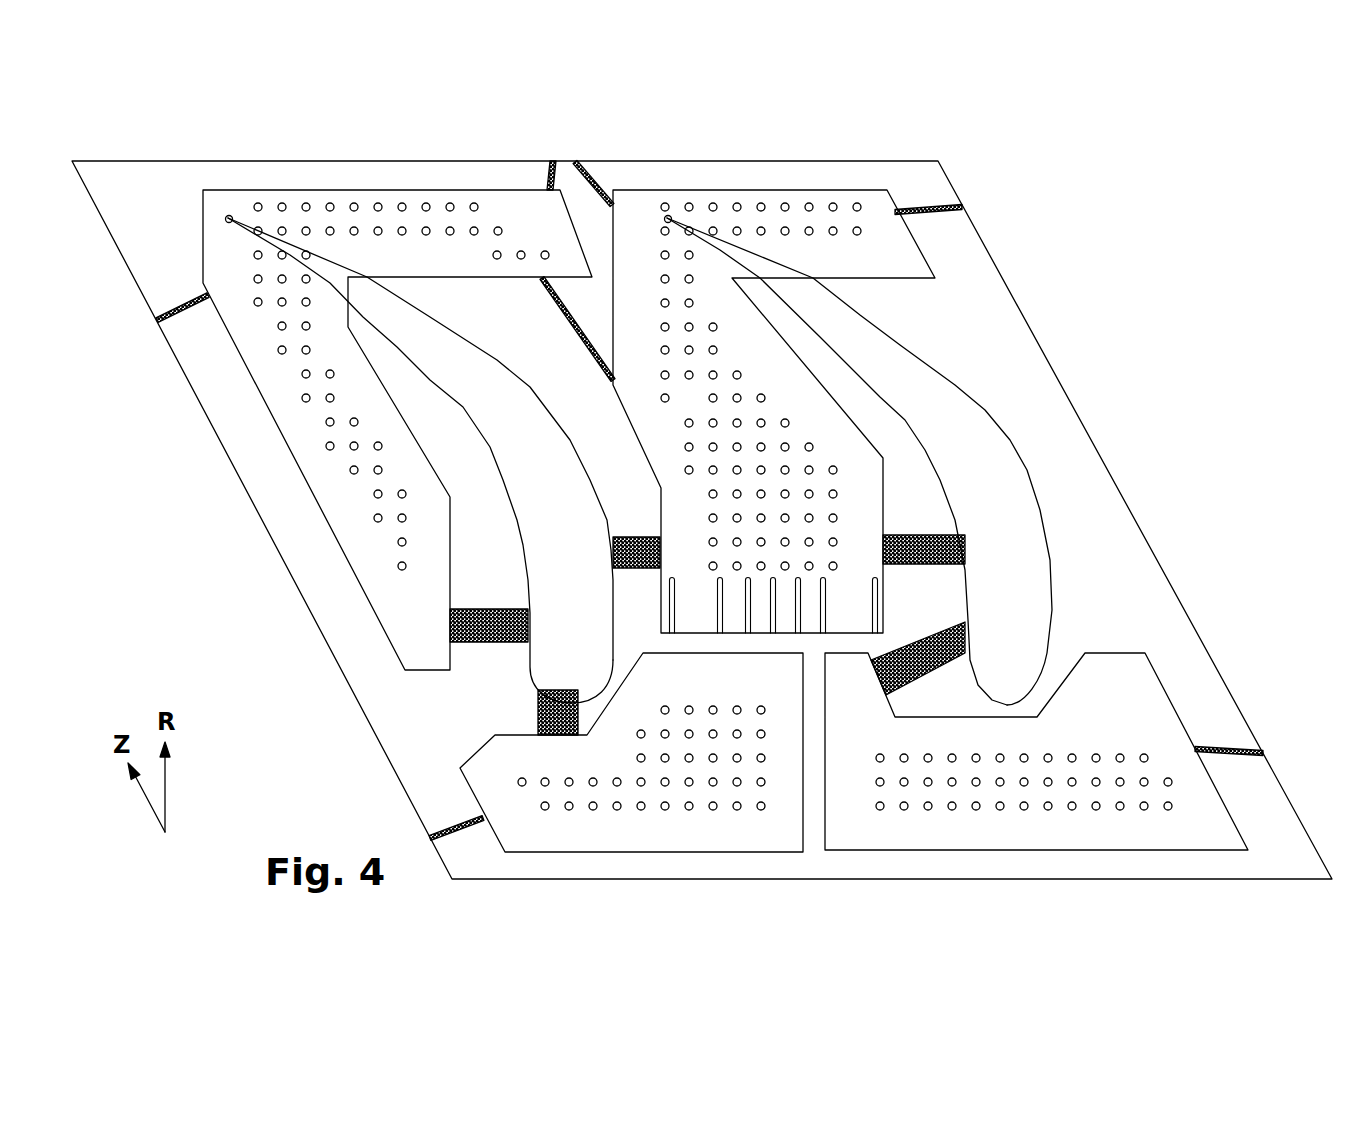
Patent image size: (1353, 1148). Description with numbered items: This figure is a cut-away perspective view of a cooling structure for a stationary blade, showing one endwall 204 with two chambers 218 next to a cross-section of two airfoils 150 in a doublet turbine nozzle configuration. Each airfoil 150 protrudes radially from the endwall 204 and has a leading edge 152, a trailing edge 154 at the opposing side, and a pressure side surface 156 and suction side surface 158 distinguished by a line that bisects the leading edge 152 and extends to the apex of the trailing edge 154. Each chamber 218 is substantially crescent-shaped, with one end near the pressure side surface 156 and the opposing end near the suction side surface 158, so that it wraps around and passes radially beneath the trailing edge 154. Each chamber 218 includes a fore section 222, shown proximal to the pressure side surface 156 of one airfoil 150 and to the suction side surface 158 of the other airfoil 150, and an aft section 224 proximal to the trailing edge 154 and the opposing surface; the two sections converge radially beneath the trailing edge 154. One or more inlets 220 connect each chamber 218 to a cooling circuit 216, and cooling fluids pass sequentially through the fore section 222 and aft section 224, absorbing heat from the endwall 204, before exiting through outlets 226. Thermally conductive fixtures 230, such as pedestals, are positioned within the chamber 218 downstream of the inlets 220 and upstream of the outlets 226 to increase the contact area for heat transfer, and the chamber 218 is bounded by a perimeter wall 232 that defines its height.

The airfoil 150 is at (468, 677).
The leading edge 152 is at (537, 678).
The trailing edge 154 is at (228, 216).
The pressure side surface 156 is at (527, 653).
The suction side surface 158 is at (607, 497).
The endwall 204 is at (906, 160).
The cooling circuit 216 is at (548, 517).
The chamber 218 is at (206, 198).
The inlet 220 is at (470, 627).
The fore section 222 is at (655, 323).
The aft section 224 is at (370, 213).
The outlet 226 is at (157, 320).
The thermally conductive fixture 230 is at (303, 398).
The perimeter wall 232 is at (243, 357).